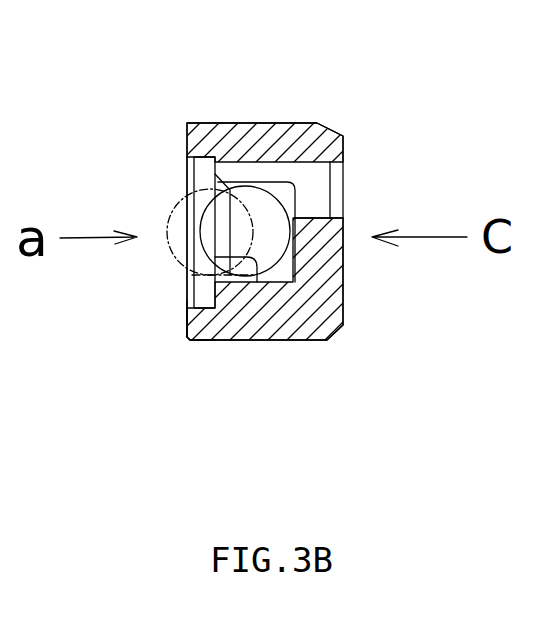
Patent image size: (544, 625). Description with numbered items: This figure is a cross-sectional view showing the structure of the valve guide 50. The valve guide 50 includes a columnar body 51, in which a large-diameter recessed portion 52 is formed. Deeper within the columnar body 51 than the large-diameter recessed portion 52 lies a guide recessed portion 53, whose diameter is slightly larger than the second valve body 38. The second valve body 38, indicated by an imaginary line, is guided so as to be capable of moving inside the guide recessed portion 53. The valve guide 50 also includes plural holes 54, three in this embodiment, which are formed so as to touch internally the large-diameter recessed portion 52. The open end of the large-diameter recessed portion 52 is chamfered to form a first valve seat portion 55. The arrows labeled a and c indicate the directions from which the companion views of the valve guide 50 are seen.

The valve guide 50 is at (268, 96).
The columnar body 51 is at (280, 335).
The large-diameter recessed portion 52 is at (193, 171).
The guide recessed portion 53 is at (222, 258).
The holes 54 is at (306, 163).
The first valve seat portion 55 is at (190, 306).
The second valve body 38 is at (172, 212).